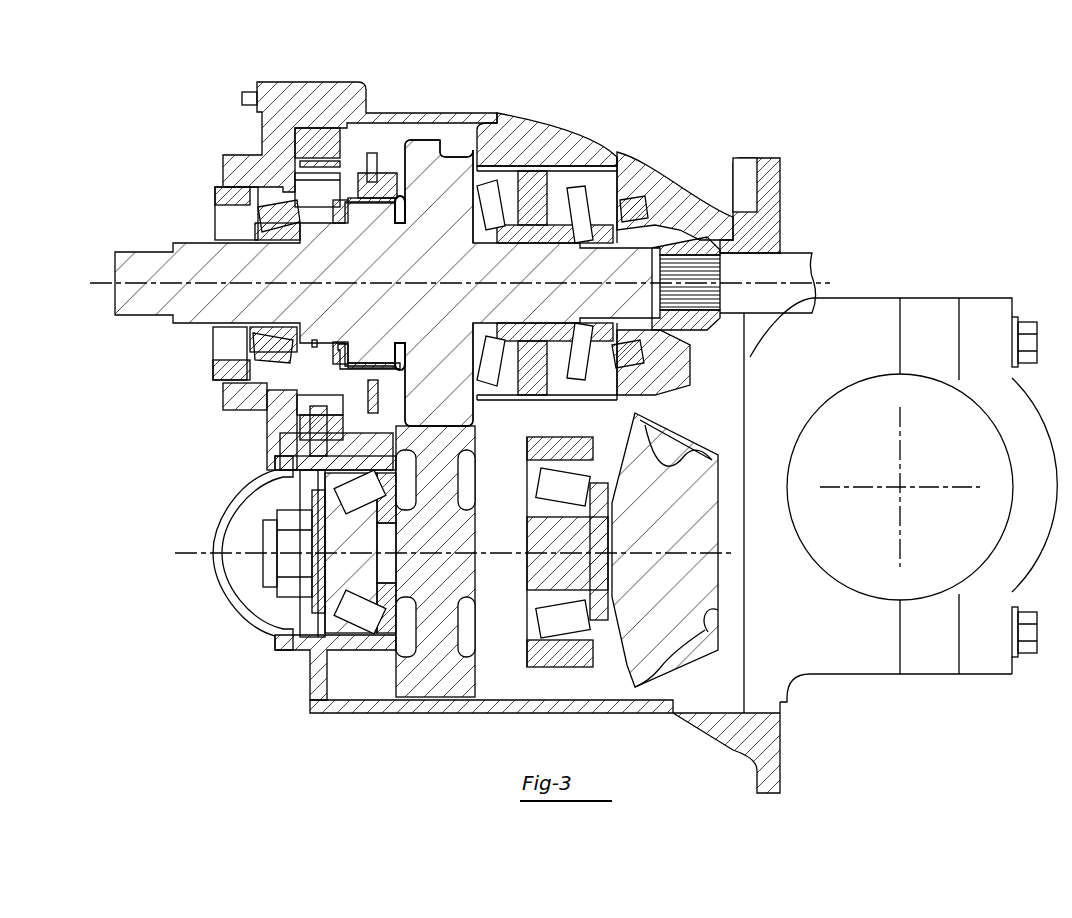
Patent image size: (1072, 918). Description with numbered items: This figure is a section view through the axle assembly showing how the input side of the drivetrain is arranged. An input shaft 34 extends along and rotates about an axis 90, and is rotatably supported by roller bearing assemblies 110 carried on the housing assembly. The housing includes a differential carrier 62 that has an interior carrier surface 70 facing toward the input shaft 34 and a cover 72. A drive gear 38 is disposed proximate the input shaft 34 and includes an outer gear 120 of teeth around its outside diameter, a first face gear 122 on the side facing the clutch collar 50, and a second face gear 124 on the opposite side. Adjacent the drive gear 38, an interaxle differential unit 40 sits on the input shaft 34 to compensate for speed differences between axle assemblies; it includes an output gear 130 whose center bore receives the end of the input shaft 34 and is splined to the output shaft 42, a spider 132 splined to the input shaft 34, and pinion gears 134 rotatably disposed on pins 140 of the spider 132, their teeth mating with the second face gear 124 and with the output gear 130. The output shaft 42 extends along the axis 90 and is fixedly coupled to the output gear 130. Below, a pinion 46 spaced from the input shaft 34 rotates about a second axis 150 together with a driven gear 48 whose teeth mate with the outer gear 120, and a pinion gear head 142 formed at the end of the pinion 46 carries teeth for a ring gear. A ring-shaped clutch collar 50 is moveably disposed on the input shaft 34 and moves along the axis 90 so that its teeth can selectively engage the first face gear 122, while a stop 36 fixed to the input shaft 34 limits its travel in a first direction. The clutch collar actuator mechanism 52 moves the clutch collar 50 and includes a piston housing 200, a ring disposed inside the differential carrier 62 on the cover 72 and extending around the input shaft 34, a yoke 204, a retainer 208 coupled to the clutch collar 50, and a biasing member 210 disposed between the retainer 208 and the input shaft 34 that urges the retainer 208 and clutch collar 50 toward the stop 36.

The input shaft 34 is at (188, 240).
The stop 36 is at (314, 340).
The drive gear 38 is at (426, 140).
The interaxle differential unit 40 is at (578, 169).
The output shaft 42 is at (790, 260).
The pinion 46 is at (260, 567).
The driven gear 48 is at (397, 670).
The clutch collar 50 is at (383, 177).
The clutch collar actuator mechanism 52 is at (347, 156).
The differential carrier 62 is at (633, 150).
The interior carrier surface 70 is at (507, 140).
The cover 72 is at (266, 82).
The axis 90 is at (104, 283).
The roller bearing assemblies 110 is at (648, 217).
The outer gear 120 is at (463, 147).
The first face gear 122 is at (395, 383).
The second face gear 124 is at (497, 383).
The output gear 130 is at (600, 382).
The spider 132 is at (533, 170).
The pinion gears 134 is at (488, 183).
The pins 140 is at (530, 393).
The pinion gear head 142 is at (630, 675).
The second axis 150 is at (190, 553).
The piston housing 200 is at (313, 128).
The yoke 204 is at (370, 408).
The retainer 208 is at (333, 353).
The biasing member 210 is at (357, 350).